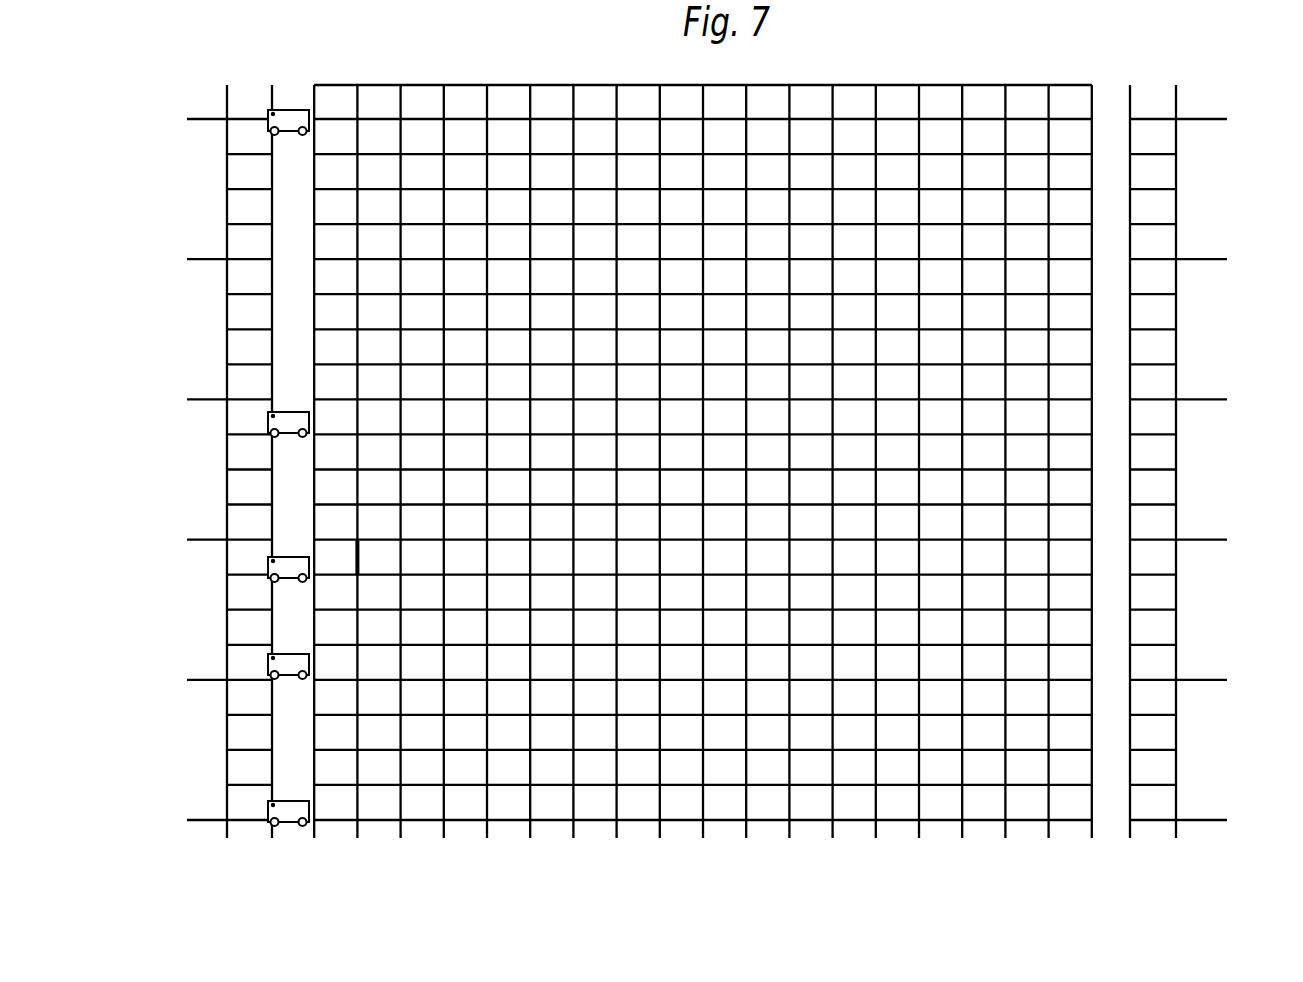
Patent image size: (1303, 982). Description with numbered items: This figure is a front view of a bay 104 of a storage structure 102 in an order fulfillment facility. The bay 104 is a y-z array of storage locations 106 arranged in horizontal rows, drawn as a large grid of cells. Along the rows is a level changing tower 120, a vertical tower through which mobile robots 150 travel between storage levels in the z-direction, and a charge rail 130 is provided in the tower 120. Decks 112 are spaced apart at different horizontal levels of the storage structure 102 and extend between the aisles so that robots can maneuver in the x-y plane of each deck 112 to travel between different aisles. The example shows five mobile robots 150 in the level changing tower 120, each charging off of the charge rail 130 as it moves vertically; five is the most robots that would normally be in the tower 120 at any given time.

The storage structure 102 is at (200, 866).
The bay 104 is at (503, 85).
The storage locations 106 is at (509, 802).
The decks 112 is at (1210, 259).
The level changing tower 120 is at (311, 83).
The charge rail 130 is at (290, 82).
The mobile robots 150 is at (274, 131).